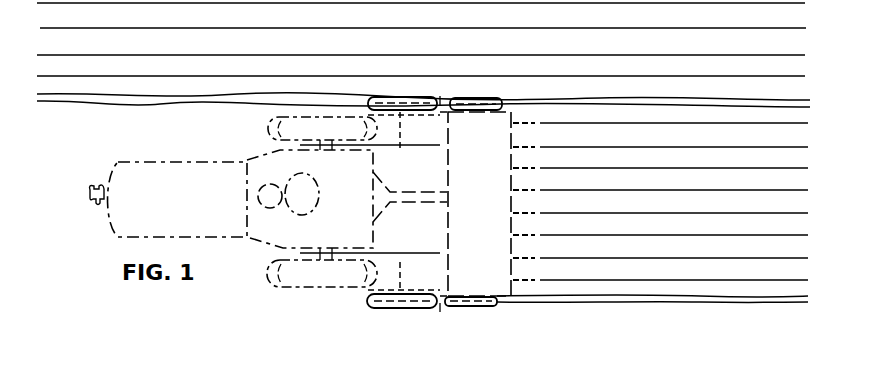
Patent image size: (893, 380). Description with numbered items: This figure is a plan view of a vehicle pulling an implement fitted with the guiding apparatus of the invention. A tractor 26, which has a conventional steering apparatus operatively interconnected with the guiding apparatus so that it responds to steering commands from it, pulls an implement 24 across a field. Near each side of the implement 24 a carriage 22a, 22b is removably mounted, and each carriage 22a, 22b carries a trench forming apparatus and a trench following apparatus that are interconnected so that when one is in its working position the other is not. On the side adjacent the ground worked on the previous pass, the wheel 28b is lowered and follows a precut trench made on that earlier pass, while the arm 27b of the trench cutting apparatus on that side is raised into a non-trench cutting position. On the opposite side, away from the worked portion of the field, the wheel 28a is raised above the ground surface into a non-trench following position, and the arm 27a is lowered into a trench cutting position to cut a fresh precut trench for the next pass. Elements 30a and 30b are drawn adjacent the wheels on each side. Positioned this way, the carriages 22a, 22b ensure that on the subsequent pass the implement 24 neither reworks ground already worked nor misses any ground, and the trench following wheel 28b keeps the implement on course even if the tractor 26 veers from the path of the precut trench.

The carriage 22a is at (446, 312).
The carriage 22b is at (449, 97).
The implement 24 is at (497, 260).
The tractor 26 is at (167, 171).
The arm 27a is at (493, 306).
The arm 27b is at (491, 100).
The wheel 28a is at (398, 308).
The wheel 28b is at (397, 103).
The lower roller support 30a is at (408, 285).
The upper roller support 30b is at (428, 123).